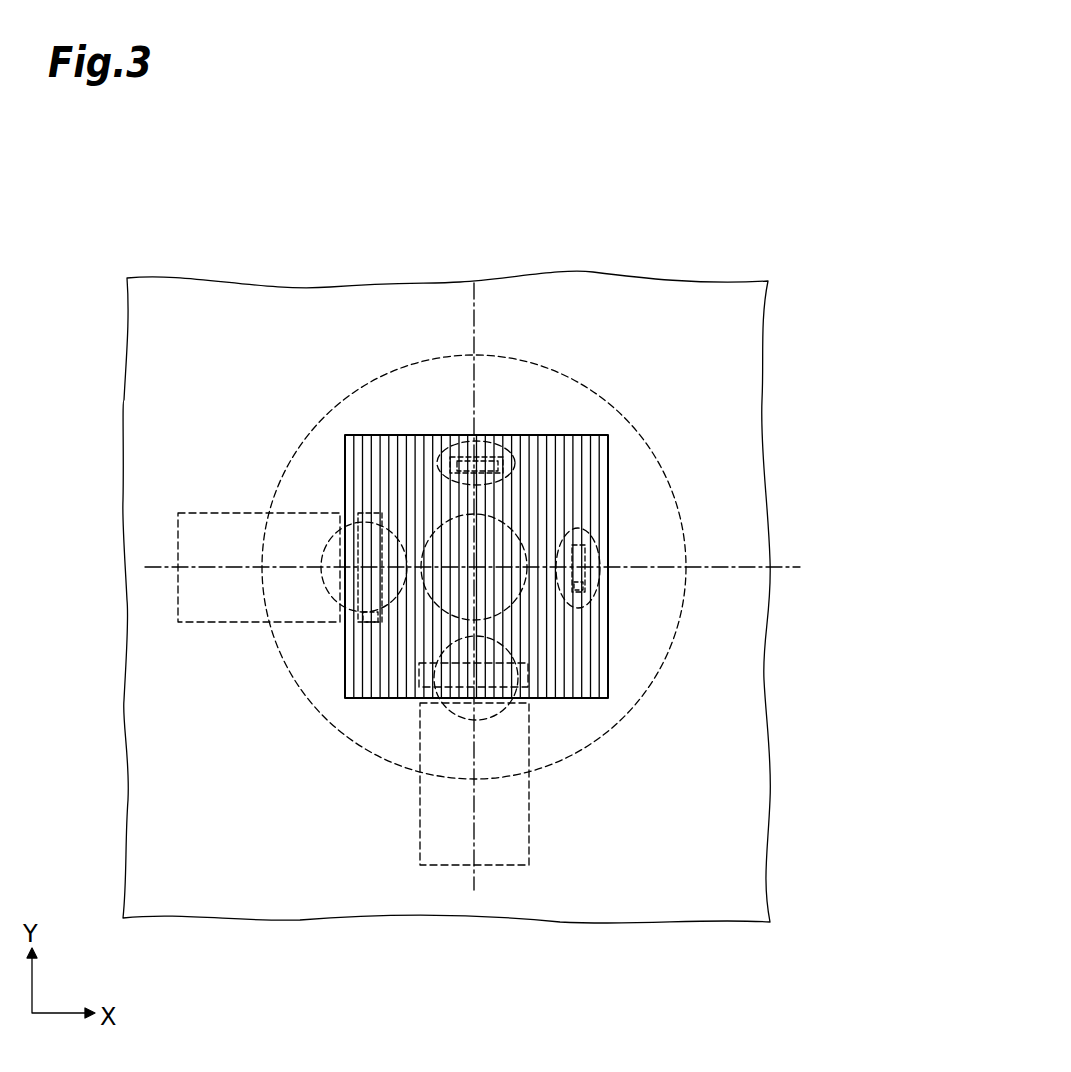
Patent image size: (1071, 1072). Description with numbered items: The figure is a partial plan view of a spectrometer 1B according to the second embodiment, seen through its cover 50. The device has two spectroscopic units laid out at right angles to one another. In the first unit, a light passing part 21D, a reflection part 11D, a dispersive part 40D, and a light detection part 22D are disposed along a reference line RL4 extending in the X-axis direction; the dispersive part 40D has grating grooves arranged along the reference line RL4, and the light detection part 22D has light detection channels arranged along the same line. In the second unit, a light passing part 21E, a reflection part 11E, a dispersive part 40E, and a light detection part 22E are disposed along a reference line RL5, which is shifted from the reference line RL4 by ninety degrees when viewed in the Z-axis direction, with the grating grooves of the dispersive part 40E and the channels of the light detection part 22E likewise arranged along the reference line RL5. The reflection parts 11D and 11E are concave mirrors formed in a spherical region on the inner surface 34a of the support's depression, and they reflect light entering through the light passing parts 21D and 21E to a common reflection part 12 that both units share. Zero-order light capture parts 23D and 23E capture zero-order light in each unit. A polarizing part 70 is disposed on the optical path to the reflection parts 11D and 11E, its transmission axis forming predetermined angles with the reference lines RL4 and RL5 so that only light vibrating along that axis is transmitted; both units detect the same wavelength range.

The spectrometer 1B is at (645, 257).
The cover 50 is at (703, 297).
The reference line RL5 is at (475, 304).
The reference line RL4 is at (752, 568).
The inner surface 34a is at (615, 409).
The polarizing part 70 is at (542, 435).
The common reflection part 12 is at (510, 607).
The reflection part 11E is at (488, 437).
The light passing part 21E is at (450, 452).
The zero-order light capture part 23D is at (363, 623).
The dispersive part 40D is at (352, 550).
The light detection part 22D is at (203, 513).
The reflection part 11D is at (593, 537).
The light passing part 21D is at (597, 592).
The zero-order light capture part 23E is at (437, 660).
The dispersive part 40E is at (493, 702).
The light detection part 22E is at (530, 822).